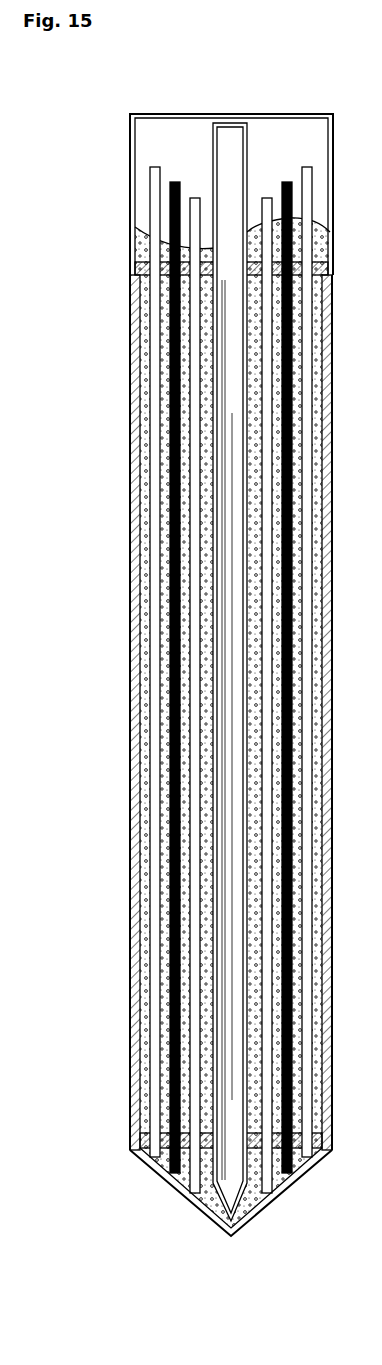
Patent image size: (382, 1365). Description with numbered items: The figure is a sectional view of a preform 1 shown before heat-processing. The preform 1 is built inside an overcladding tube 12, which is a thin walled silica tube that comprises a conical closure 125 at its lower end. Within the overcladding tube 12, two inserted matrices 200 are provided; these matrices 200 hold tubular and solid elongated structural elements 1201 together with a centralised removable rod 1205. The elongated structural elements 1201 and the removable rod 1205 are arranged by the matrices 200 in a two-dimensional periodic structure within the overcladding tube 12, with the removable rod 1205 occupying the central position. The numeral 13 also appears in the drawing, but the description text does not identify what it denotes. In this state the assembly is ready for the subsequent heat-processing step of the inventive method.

The preform 1 is at (122, 475).
The overcladding tube 12 is at (130, 155).
The cap wall 13 is at (133, 243).
The conical closure 125 is at (132, 252).
The matrix 200 is at (132, 277).
The elongated structural elements 1201 is at (157, 673).
The removable rod 1205 is at (231, 160).